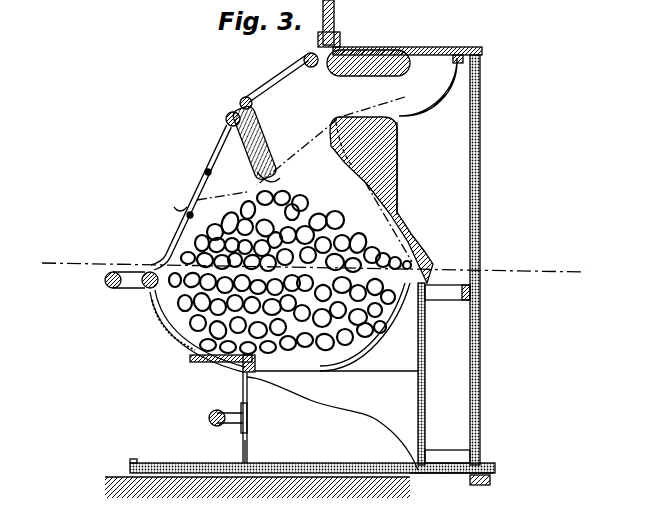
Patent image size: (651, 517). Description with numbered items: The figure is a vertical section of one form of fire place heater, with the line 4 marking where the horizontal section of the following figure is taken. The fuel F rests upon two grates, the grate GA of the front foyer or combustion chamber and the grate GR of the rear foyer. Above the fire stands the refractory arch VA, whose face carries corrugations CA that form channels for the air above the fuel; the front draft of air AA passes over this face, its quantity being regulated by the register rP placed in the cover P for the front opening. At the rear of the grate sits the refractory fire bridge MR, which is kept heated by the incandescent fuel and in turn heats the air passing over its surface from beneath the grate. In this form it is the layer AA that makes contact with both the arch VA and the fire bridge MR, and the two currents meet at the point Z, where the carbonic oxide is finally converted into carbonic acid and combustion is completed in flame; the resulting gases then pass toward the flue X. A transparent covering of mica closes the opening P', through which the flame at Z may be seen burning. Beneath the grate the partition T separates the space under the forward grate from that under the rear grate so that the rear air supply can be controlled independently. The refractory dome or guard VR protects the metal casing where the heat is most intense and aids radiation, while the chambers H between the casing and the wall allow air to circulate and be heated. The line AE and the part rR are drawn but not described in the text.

The opening P' is at (279, 81).
The cover P is at (219, 123).
The arch VA is at (268, 115).
The flue X is at (428, 84).
The refractory dome or guard VR is at (372, 68).
The point of contact Z is at (343, 118).
The fire bridge MR is at (347, 160).
The corrugations CA is at (259, 183).
The register rP is at (204, 181).
The front draft of air AA is at (206, 201).
The axis line AE is at (370, 182).
The fuel F is at (356, 243).
The chambers or spaces H is at (435, 352).
The grate of the front foyer GA is at (194, 331).
The grate of the rear foyer GR is at (325, 372).
The rod rR is at (243, 391).
The partition T is at (247, 446).
The section line 4- 4 is at (313, 272).